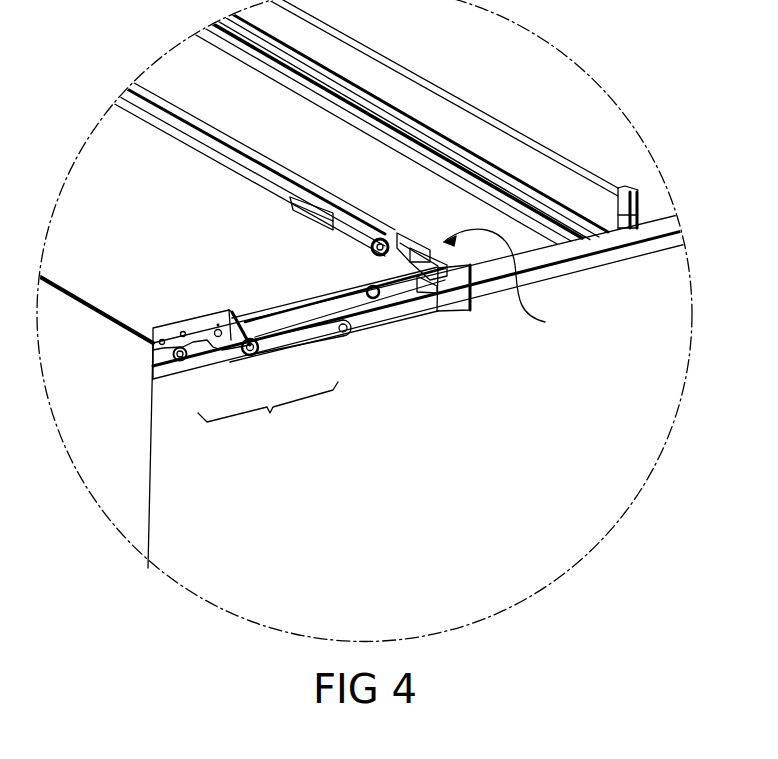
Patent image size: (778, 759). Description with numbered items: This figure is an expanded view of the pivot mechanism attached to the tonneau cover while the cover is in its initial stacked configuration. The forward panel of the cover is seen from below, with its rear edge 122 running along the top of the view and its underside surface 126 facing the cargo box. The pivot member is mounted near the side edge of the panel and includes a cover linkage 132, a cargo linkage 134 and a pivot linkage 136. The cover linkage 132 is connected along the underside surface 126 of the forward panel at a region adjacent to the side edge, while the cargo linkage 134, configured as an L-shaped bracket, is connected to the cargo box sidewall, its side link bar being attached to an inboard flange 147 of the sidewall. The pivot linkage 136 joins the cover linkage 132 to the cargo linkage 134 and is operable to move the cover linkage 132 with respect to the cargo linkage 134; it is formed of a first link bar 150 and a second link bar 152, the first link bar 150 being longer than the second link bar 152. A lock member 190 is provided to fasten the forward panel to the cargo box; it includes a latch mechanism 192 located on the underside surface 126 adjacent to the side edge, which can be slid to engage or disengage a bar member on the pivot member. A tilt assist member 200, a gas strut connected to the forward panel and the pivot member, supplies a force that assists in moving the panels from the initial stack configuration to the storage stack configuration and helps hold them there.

The rear edge 122 is at (486, 142).
The underside surface 126 is at (156, 223).
The cover linkage 132 is at (202, 326).
The cargo linkage 134 is at (448, 303).
The pivot linkage 136 is at (268, 412).
The inboard flange 147 is at (646, 237).
The first link bar 150 is at (317, 330).
The second link bar 152 is at (188, 357).
The lock member 190 is at (512, 282).
The latch mechanism 192 is at (383, 243).
The tilt assist member 200 is at (290, 315).